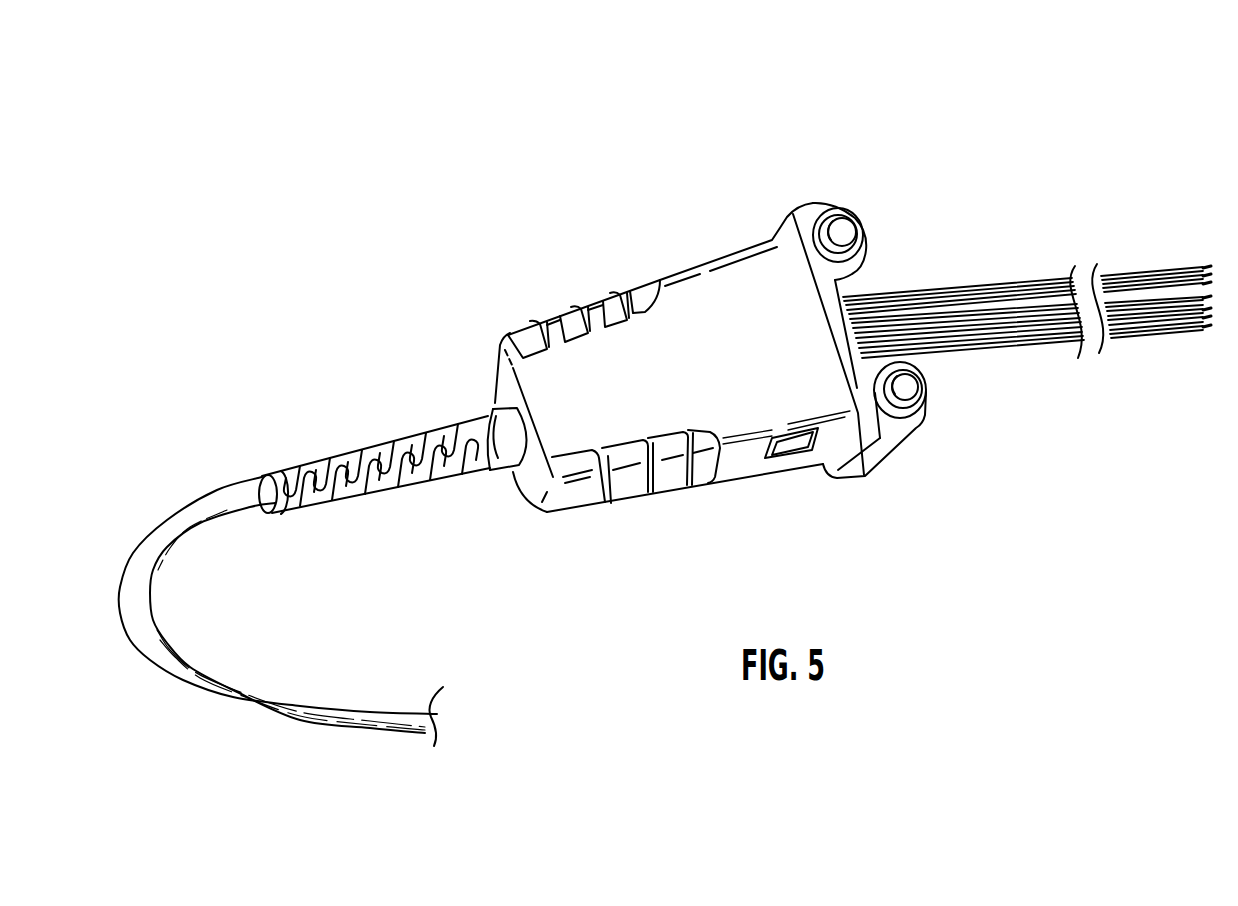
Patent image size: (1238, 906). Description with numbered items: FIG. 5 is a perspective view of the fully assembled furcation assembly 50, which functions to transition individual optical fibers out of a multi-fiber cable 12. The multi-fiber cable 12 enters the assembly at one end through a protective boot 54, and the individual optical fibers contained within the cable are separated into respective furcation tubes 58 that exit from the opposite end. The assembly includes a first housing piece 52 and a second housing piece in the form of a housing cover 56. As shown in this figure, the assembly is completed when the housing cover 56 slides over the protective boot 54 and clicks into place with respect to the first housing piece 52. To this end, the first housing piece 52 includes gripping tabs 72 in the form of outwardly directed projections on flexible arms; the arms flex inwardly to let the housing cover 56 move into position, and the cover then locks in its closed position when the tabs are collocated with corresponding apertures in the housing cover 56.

The furcation assembly 50 is at (405, 123).
The multi-fiber cable 12 is at (297, 702).
The first housing piece 52 is at (806, 213).
The protective boot 54 is at (492, 410).
The housing cover 56 is at (738, 379).
The furcation tubes 58 is at (1040, 280).
The gripping tabs 72 is at (793, 447).